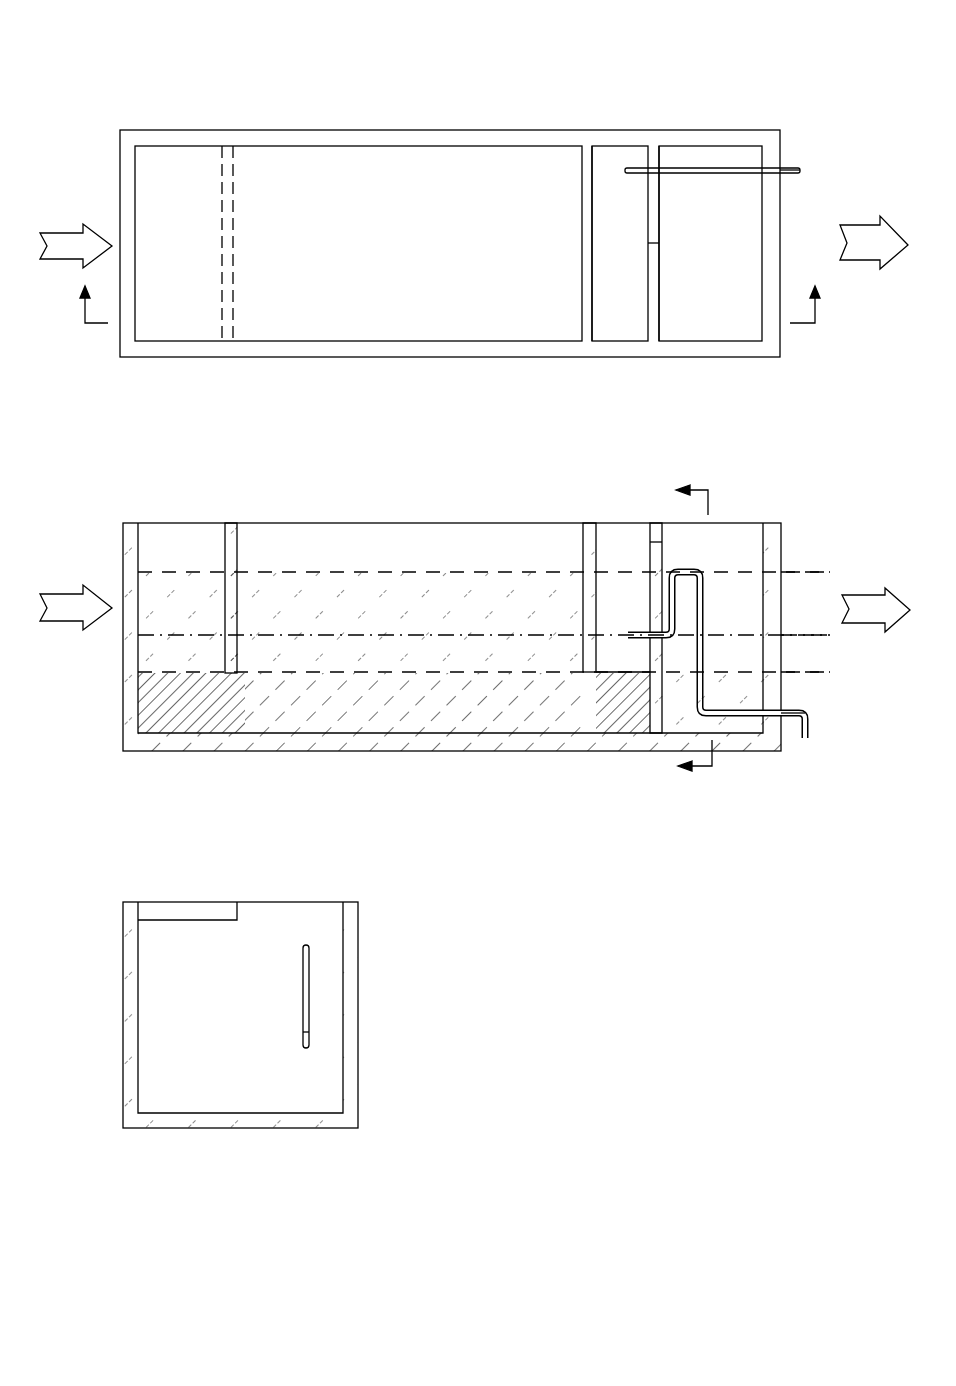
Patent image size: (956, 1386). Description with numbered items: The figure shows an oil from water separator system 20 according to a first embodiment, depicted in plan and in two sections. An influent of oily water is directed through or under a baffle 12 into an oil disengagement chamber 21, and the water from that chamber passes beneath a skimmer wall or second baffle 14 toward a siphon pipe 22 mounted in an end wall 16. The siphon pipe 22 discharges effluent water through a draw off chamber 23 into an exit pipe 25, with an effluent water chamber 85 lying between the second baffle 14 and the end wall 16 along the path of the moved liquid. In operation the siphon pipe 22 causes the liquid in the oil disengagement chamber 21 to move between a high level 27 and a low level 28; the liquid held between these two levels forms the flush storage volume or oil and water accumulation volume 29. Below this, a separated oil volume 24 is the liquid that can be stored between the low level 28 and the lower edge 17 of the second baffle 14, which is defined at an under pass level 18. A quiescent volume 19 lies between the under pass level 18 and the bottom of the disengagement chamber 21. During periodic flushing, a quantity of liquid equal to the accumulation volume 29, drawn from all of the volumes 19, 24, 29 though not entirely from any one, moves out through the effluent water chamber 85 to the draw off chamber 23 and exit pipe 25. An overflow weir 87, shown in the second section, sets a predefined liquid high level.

The oil from water separator system 20 is at (370, 104).
The oil disengagement chamber 21 is at (430, 243).
The baffle 12 is at (222, 165).
The skimmer wall or second baffle 14 is at (578, 175).
The effluent water chamber 85 is at (612, 187).
The end wall 16 is at (648, 321).
The draw off chamber 23 is at (738, 312).
The siphon pipe 22 is at (712, 167).
The exit pipe 25 is at (797, 168).
The quiescent volume 19 is at (477, 705).
The separated oil volume 24 is at (477, 652).
The oil and water accumulation volume 29 is at (477, 600).
The high level 27 is at (826, 572).
The low level 28 is at (826, 635).
The under pass level 18 is at (838, 672).
The lower edge 17 is at (593, 676).
The weir 87 is at (182, 912).